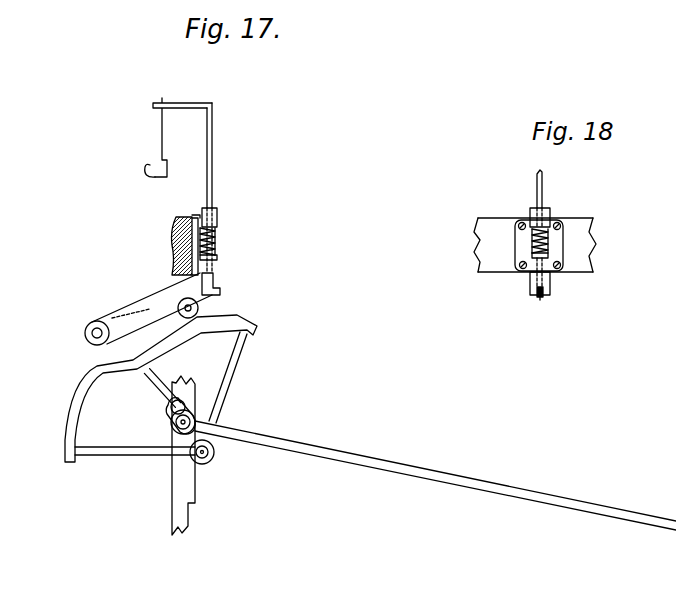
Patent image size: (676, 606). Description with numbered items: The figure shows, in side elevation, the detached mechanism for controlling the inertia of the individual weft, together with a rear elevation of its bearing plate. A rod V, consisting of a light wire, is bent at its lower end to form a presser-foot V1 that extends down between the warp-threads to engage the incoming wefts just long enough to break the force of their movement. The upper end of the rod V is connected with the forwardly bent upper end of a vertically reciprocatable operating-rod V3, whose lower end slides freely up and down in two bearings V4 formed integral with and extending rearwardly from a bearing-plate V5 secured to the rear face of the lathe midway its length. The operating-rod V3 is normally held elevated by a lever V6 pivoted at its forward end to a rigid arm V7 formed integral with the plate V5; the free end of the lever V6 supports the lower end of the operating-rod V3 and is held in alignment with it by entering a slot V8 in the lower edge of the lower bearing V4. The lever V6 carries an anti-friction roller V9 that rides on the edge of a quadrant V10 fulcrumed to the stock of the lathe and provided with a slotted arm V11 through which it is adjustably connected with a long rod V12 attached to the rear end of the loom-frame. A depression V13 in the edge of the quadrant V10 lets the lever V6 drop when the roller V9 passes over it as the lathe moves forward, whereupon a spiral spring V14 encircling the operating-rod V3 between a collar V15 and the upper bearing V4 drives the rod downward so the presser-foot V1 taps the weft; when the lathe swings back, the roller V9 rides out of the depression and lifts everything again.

In FIG. 17, the rod V is at (162, 130).
In FIG. 17, the presser-foot V1 is at (148, 175).
In FIG. 17, the operating-rod V3 is at (213, 132).
In FIG. 18, the operating-rod V3 is at (543, 182).
In FIG. 17, the bearing V4 is at (217, 212).
In FIG. 18, the bearing V4 is at (550, 210).
In FIG. 17, the bearing-plate V5 is at (195, 216).
In FIG. 18, the bearing-plate V5 is at (557, 243).
In FIG. 17, the lever V6 is at (200, 306).
In FIG. 18, the lever V6 is at (540, 300).
In FIG. 17, the rigid arm V7 is at (109, 317).
In FIG. 18, the slot V8 is at (543, 300).
In FIG. 17, the anti-friction roller V9 is at (173, 295).
In FIG. 17, the quadrant V10 is at (116, 447).
In FIG. 17, the slotted arm V11 is at (188, 402).
In FIG. 17, the long rod V12 is at (435, 474).
In FIG. 17, the depression V13 is at (159, 370).
In FIG. 17, the spiral spring V14 is at (216, 240).
In FIG. 18, the spiral spring V14 is at (531, 243).
In FIG. 17, the collar V15 is at (218, 258).
In FIG. 18, the collar V15 is at (527, 272).